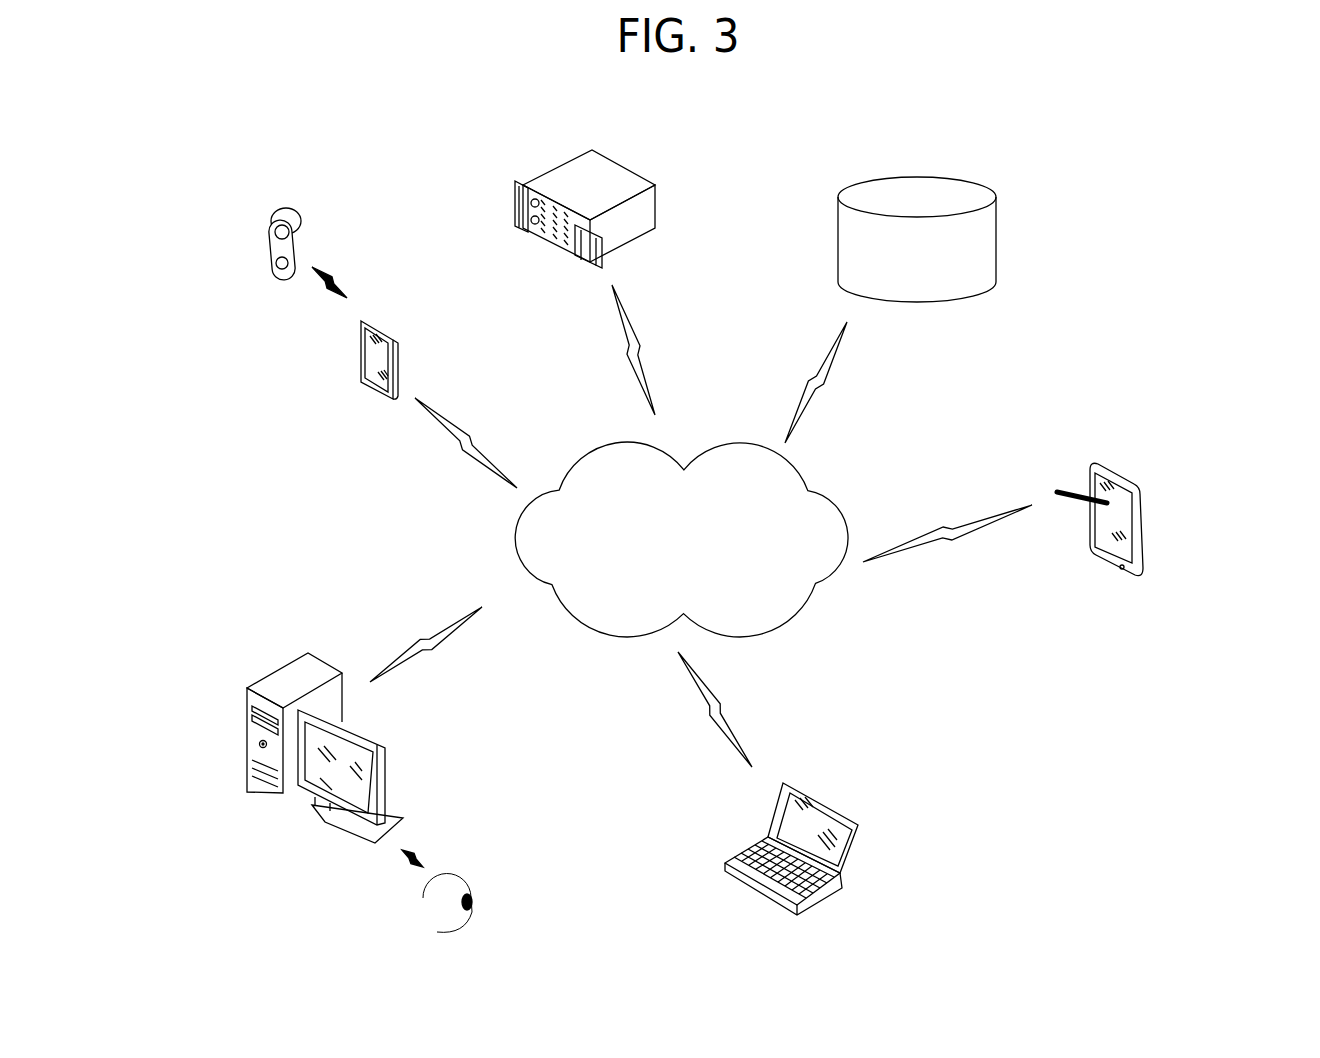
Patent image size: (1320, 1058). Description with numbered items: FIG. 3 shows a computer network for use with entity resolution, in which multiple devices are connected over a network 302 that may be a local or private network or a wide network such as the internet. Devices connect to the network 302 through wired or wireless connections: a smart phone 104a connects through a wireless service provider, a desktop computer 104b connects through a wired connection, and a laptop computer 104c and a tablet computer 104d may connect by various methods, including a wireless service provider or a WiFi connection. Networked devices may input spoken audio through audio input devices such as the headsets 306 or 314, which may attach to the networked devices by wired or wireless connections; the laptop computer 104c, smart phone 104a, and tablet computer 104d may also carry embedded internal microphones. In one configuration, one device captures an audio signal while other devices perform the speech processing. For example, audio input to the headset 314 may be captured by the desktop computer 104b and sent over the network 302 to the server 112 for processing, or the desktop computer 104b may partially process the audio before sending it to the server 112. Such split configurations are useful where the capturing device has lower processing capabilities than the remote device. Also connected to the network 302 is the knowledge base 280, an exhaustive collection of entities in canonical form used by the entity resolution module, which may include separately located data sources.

The network 302 is at (681, 539).
The headset 306 is at (292, 206).
The smart phone 104a is at (360, 350).
The server 112 is at (563, 170).
The knowledge base 280 is at (917, 239).
The tablet computer 104d is at (1138, 520).
The desktop computer 104b is at (236, 701).
The headset 314 is at (457, 868).
The laptop computer 104c is at (860, 828).